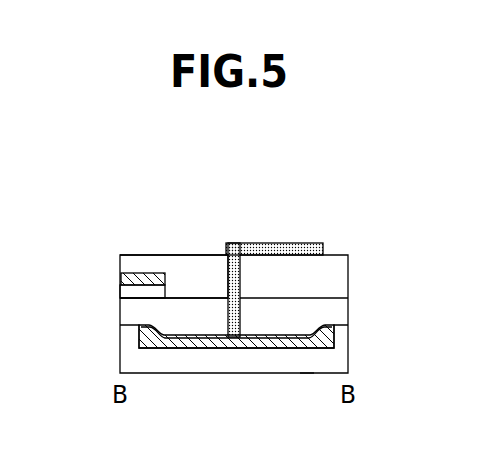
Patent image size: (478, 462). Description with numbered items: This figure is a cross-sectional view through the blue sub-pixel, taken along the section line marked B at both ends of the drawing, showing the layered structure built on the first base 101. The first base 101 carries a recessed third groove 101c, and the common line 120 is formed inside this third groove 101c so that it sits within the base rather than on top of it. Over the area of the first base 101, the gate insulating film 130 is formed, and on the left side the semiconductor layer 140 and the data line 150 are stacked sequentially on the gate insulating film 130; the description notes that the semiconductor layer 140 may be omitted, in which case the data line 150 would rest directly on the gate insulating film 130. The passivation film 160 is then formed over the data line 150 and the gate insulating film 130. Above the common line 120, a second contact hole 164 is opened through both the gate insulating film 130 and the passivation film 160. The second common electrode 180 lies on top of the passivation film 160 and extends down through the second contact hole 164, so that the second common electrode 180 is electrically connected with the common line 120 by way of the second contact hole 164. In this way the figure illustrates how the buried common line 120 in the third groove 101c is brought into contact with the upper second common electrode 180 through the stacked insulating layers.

The first base 101 is at (344, 358).
The third groove 101c is at (307, 352).
The common line 120 is at (344, 336).
The gate insulating film 130 is at (344, 312).
The semiconductor layer 140 is at (120, 292).
The data line 150 is at (120, 280).
The passivation film 160 is at (120, 265).
The second contact hole 164 is at (227, 285).
The second common electrode 180 is at (323, 247).